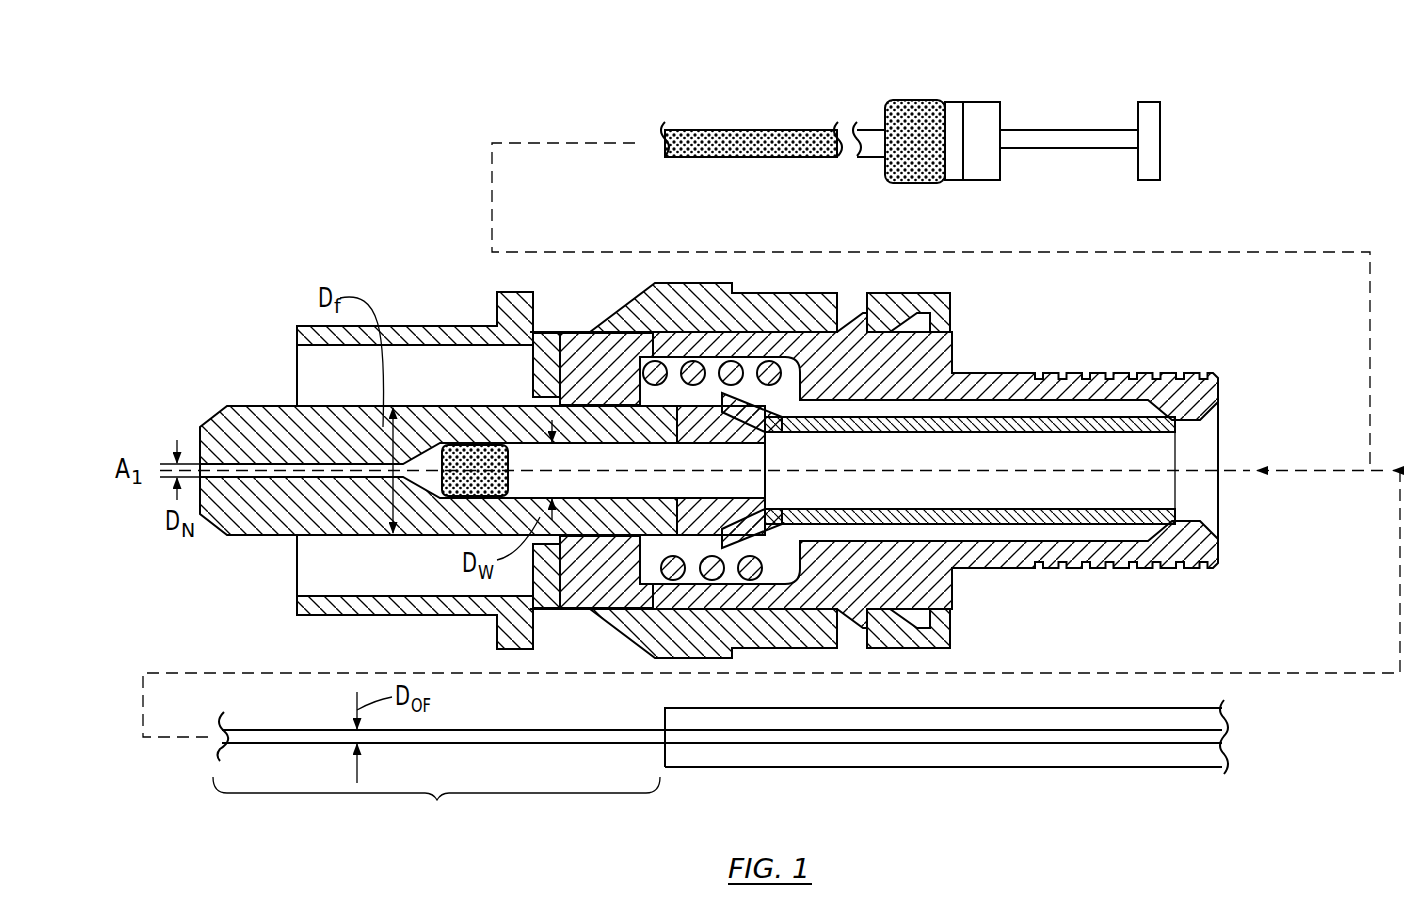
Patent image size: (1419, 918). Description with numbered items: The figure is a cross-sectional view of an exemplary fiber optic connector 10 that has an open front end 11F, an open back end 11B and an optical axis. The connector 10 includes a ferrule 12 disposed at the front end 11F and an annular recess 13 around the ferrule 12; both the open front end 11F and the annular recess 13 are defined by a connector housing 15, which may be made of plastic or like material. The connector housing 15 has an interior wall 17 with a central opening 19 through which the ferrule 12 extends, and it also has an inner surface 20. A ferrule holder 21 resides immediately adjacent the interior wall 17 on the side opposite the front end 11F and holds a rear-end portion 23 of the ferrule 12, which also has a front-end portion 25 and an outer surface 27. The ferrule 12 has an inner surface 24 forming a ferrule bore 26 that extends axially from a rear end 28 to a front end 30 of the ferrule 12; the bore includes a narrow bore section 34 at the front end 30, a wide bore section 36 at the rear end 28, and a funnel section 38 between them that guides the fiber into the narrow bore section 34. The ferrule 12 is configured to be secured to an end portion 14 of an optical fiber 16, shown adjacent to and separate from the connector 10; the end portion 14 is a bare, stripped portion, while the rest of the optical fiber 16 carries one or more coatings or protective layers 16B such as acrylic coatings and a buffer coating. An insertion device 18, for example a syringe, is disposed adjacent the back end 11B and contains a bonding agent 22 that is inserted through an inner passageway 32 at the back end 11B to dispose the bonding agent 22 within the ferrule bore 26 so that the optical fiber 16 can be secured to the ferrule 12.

The fiber optic connector 10 is at (258, 255).
The open front end 11F is at (283, 598).
The open back end 11B is at (1230, 532).
The ferrule 12 is at (227, 418).
The annular recess 13 is at (313, 360).
The end portion 14 is at (439, 771).
The connector housing 15 is at (407, 323).
The optical fiber 16 is at (1032, 792).
The coatings or protective layers 16B is at (895, 768).
The interior wall 17 is at (537, 565).
The insertion device 18 is at (1163, 112).
The central opening 19 is at (515, 382).
The inner surface 20 is at (385, 348).
The ferrule holder 21 is at (615, 401).
The bonding agent 22 is at (480, 490).
The rear-end portion 23 is at (693, 445).
The inner surface 24 is at (345, 490).
The front-end portion 25 is at (380, 538).
The ferrule bore 26 is at (275, 453).
The outer surface 27 is at (327, 540).
The rear end 28 is at (683, 470).
The front end 30 is at (166, 418).
The inner passageway 32 is at (1067, 450).
The narrow bore section 34 is at (303, 480).
The wide bore section 36 is at (490, 435).
The funnel section 38 is at (417, 447).